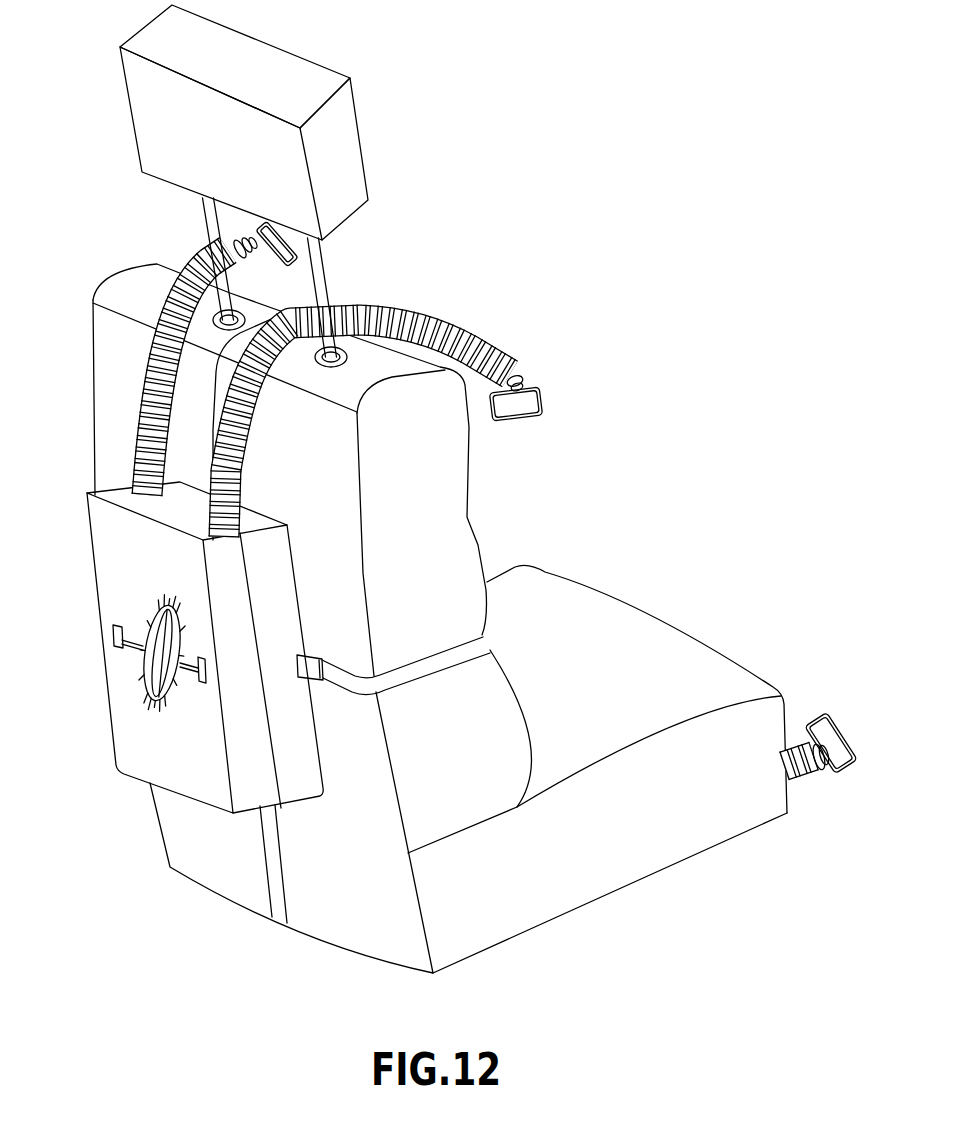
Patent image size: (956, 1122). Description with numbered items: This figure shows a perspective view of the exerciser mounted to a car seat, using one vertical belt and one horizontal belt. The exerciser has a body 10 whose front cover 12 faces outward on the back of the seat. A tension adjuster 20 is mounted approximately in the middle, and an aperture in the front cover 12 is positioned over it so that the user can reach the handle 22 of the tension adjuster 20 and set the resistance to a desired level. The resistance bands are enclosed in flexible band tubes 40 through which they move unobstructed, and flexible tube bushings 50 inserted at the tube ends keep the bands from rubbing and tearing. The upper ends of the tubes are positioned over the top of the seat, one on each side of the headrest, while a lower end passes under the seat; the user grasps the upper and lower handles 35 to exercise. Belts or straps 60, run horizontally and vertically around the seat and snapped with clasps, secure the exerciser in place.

The body 10 is at (108, 400).
The front cover 12 is at (127, 733).
The tension adjuster 20 is at (144, 652).
The handle 22 is at (162, 660).
The handles 35 is at (292, 249).
The flexible band tube 40 is at (207, 268).
The flexible tube bushing 50 is at (514, 372).
The belts or straps 60 is at (258, 318).